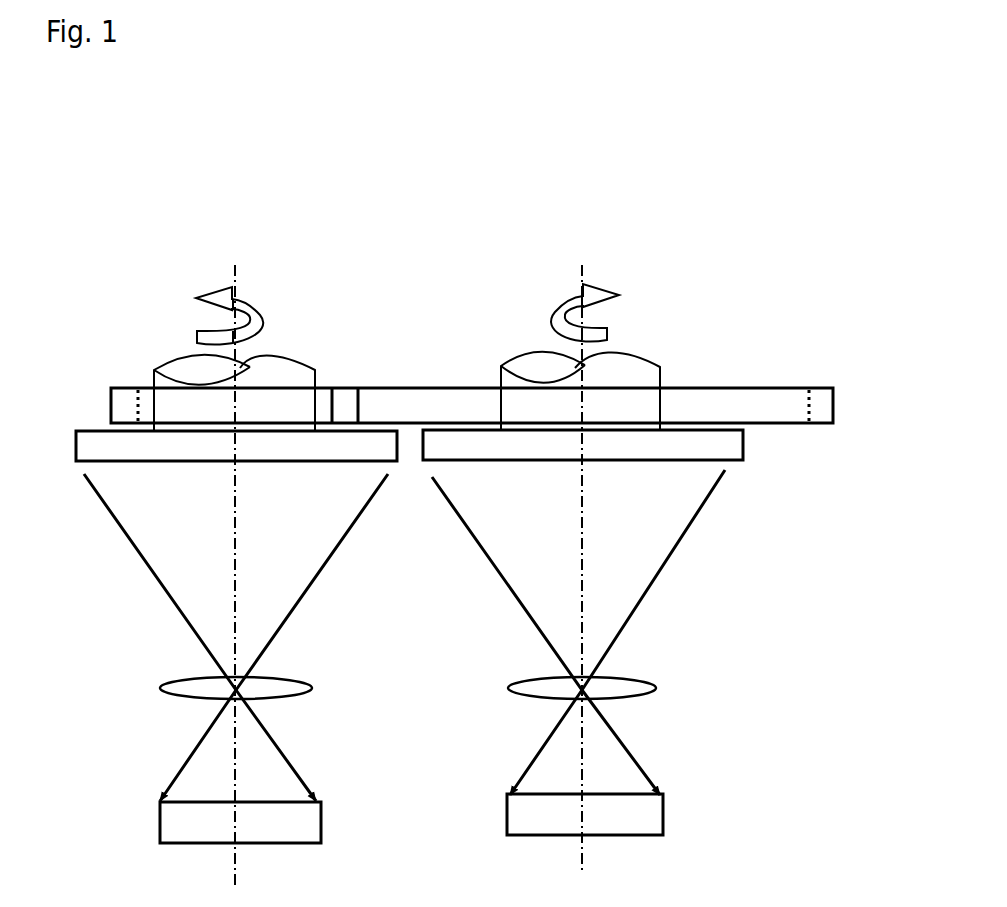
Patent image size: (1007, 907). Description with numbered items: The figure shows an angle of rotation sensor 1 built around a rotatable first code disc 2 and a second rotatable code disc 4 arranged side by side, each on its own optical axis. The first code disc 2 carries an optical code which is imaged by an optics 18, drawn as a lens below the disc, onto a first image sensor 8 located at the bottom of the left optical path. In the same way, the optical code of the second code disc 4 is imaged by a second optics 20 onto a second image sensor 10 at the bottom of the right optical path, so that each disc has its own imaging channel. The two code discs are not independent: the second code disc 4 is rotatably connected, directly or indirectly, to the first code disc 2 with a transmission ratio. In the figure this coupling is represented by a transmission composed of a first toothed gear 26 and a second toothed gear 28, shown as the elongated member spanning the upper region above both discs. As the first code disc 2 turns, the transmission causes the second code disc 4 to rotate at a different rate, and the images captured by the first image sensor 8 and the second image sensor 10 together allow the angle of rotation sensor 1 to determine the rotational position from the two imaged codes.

The angle of rotation sensor 1 is at (636, 200).
The first code disc 2 is at (279, 463).
The second code disc 4 is at (618, 463).
The first image sensor 8 is at (290, 823).
The second image sensor 10 is at (643, 813).
The optics 18 is at (280, 693).
The second optics 20 is at (622, 688).
The first toothed gear 26 is at (141, 386).
The second toothed gear 28 is at (772, 386).